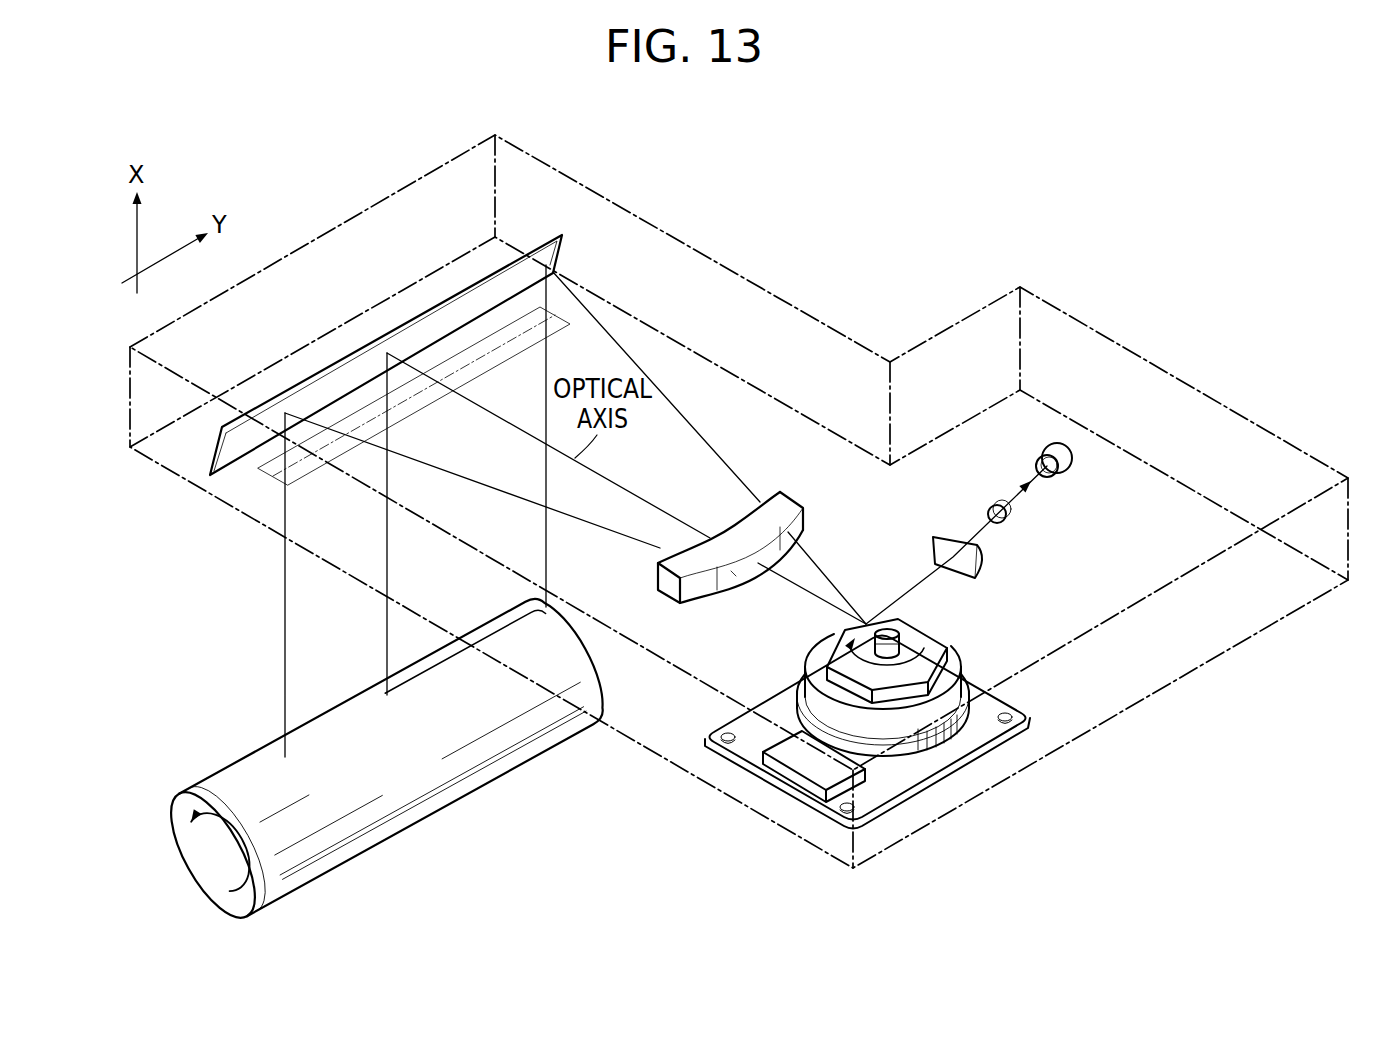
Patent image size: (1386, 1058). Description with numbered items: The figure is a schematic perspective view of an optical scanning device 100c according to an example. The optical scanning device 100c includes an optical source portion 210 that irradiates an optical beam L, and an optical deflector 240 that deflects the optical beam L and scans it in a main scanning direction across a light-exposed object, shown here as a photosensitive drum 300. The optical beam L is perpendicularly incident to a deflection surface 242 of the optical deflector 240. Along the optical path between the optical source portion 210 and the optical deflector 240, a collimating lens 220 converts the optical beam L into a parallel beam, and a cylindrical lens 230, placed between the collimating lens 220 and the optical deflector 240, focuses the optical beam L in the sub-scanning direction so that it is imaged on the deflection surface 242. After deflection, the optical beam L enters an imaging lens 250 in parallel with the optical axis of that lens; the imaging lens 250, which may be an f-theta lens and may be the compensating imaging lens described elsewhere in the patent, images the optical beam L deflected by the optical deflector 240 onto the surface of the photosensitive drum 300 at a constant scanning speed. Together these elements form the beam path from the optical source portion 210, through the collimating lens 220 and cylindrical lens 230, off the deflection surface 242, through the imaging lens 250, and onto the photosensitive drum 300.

The optical scanning device 100c is at (953, 197).
The optical source portion 210 is at (1070, 470).
The collimating lens 220 is at (1004, 520).
The cylindrical lens 230 is at (985, 565).
The optical deflector 240 is at (1013, 683).
The deflection surface 242 is at (893, 695).
The imaging lens 250 is at (788, 502).
The photosensitive drum 300 is at (440, 806).
The optical beam L is at (917, 590).